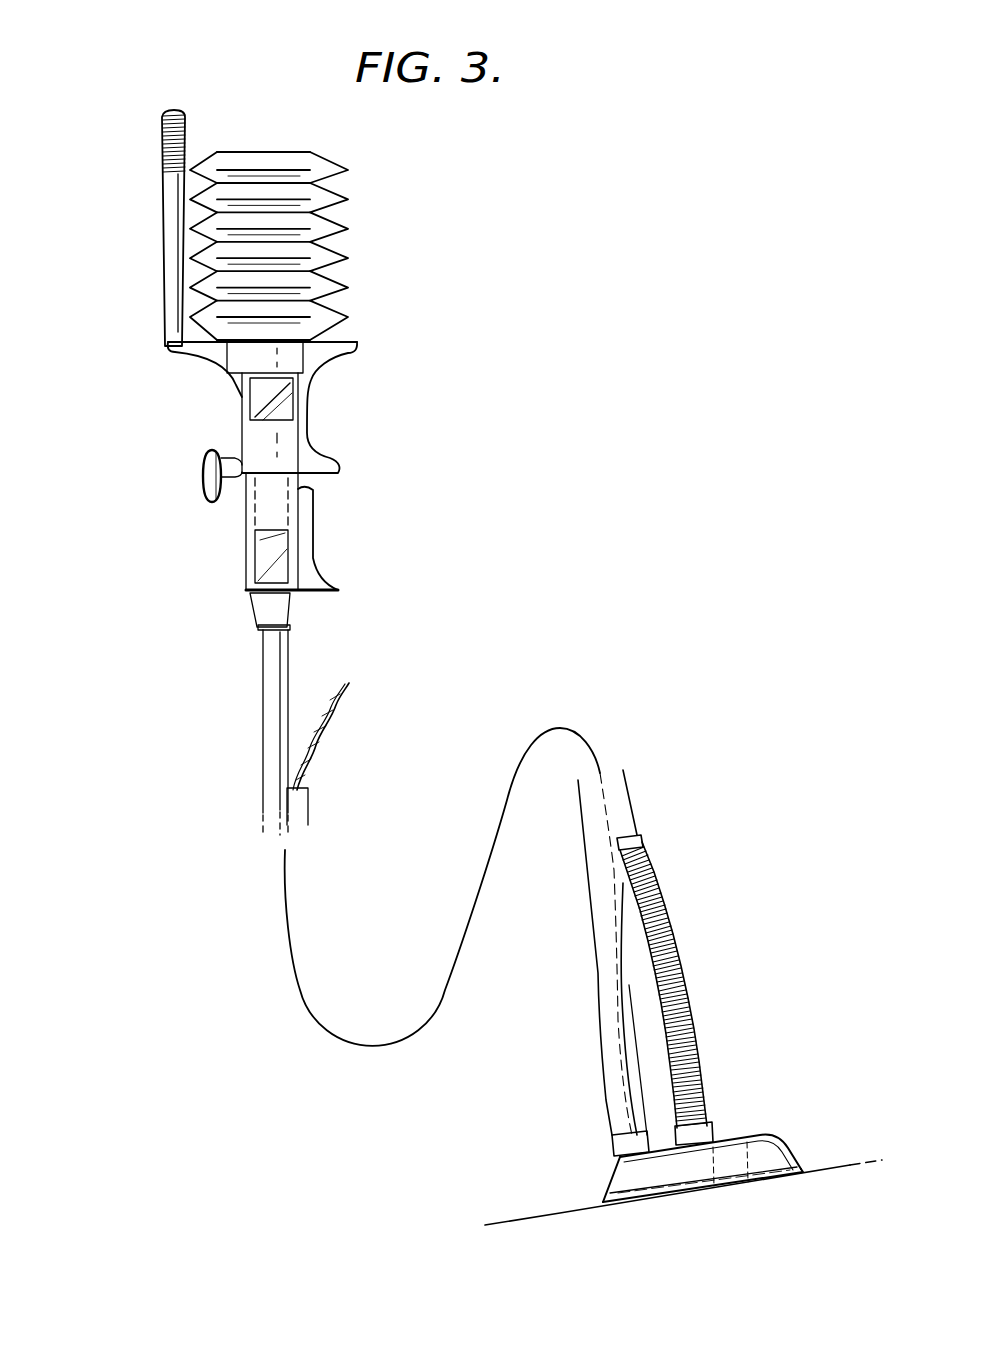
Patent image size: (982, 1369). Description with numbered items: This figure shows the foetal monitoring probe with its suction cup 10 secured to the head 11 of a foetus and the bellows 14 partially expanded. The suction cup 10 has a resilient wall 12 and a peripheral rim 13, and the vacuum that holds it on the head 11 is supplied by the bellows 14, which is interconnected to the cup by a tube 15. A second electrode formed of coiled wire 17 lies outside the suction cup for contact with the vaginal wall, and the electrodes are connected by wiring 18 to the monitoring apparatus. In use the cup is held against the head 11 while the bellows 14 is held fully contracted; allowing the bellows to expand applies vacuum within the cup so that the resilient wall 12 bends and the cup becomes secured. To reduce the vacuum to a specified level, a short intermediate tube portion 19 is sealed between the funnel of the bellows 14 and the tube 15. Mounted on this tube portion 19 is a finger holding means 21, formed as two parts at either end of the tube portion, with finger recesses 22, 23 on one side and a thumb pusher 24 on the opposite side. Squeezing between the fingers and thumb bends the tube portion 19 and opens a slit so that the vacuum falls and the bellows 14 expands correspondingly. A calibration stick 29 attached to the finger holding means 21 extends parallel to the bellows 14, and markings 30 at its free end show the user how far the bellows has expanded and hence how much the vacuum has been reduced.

The suction cup 10 is at (782, 1113).
The head of a foetus 11 is at (545, 1210).
The resilient wall 12 is at (787, 1147).
The peripheral rim 13 is at (803, 1167).
The bellows 14 is at (335, 250).
The tube 15 is at (600, 1013).
The coiled wire 17 is at (697, 1032).
The wiring 18 is at (327, 731).
The intermediate tube portion 19 is at (250, 527).
The finger holding means 21 is at (180, 403).
The finger recess 22 is at (298, 423).
The finger recess 23 is at (307, 537).
The thumb pusher 24 is at (203, 466).
The calibration stick 29 is at (165, 240).
The markings 30 is at (165, 139).